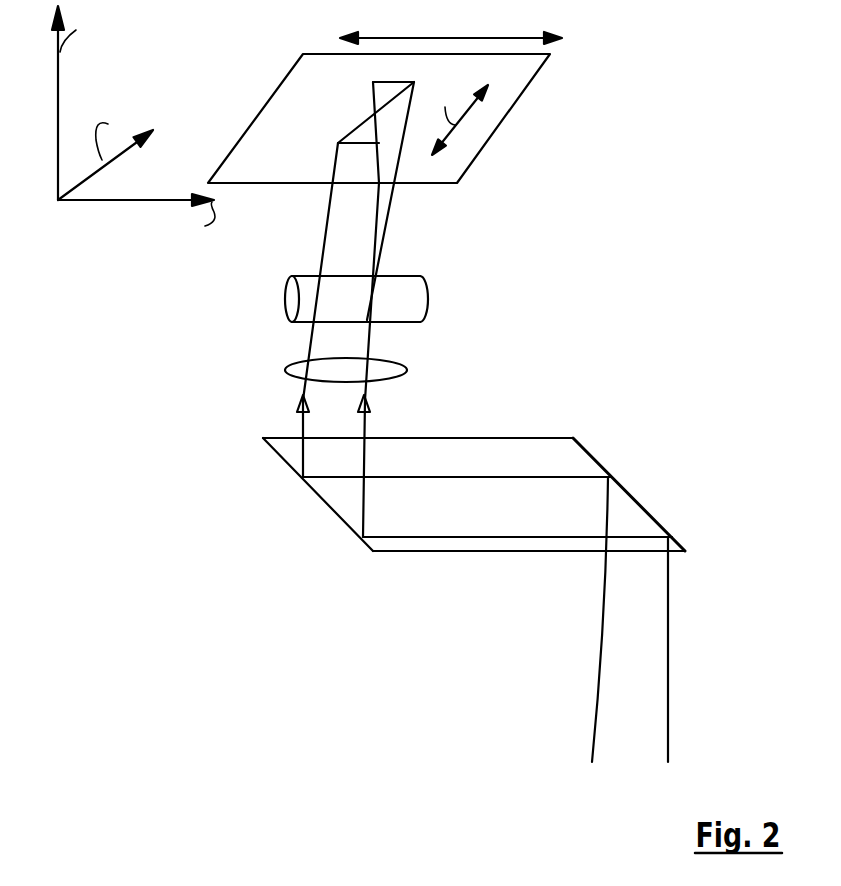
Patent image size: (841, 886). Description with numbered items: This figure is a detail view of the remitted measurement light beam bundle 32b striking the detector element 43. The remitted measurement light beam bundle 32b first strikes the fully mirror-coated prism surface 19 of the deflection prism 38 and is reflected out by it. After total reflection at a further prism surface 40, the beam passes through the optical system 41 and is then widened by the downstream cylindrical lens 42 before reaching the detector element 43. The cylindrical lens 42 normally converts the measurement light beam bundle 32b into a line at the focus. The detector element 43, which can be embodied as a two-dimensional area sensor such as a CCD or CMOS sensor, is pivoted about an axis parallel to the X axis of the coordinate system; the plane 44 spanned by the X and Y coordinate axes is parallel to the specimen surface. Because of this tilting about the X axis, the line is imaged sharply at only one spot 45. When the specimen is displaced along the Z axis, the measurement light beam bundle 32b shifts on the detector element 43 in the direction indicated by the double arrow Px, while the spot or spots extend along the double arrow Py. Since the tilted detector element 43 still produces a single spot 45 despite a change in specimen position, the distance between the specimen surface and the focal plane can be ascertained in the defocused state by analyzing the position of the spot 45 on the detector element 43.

The fully mirror-coated prism surface 19 is at (603, 464).
The remitted measurement light beam bundle 32b is at (617, 647).
The deflection prism 38 is at (452, 447).
The prism surface 40 is at (312, 488).
The optical system 41 is at (295, 368).
The cylindrical lens 42 is at (300, 298).
The detector element 43 is at (292, 88).
The plane 44 is at (117, 190).
The spot 45 is at (376, 113).